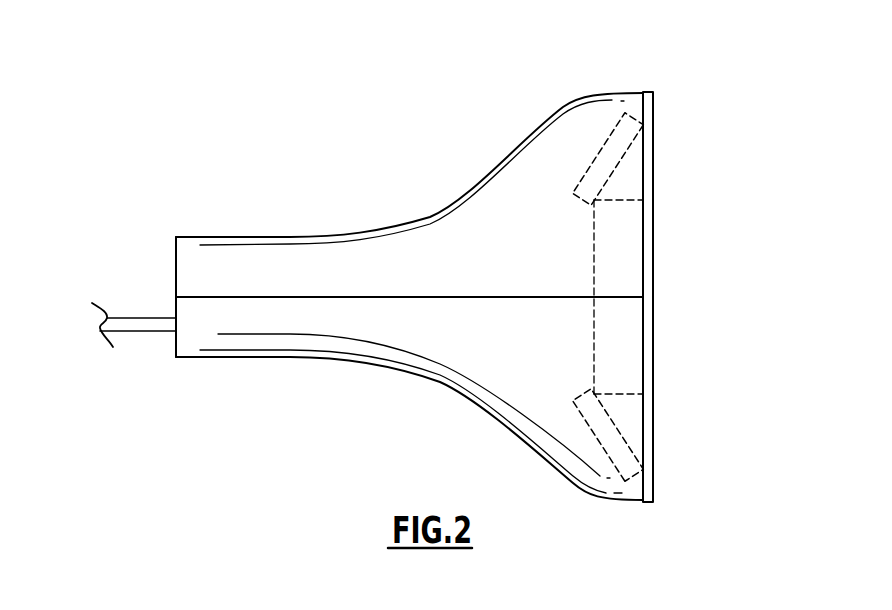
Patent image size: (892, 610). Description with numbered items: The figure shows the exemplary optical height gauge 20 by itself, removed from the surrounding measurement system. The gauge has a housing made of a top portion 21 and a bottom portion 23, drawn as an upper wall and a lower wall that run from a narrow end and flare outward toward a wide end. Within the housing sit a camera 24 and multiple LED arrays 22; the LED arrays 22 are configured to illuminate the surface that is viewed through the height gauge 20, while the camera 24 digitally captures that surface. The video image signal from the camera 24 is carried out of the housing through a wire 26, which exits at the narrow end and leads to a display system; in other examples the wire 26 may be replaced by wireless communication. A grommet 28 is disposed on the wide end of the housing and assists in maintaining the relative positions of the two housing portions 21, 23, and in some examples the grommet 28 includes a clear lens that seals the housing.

The optical height gauge 20 is at (428, 240).
The top portion 21 is at (271, 237).
The LED array 22 is at (605, 143).
The bottom portion 23 is at (290, 358).
The camera 24 is at (630, 242).
The wire 26 is at (148, 318).
The grommet 28 is at (653, 110).